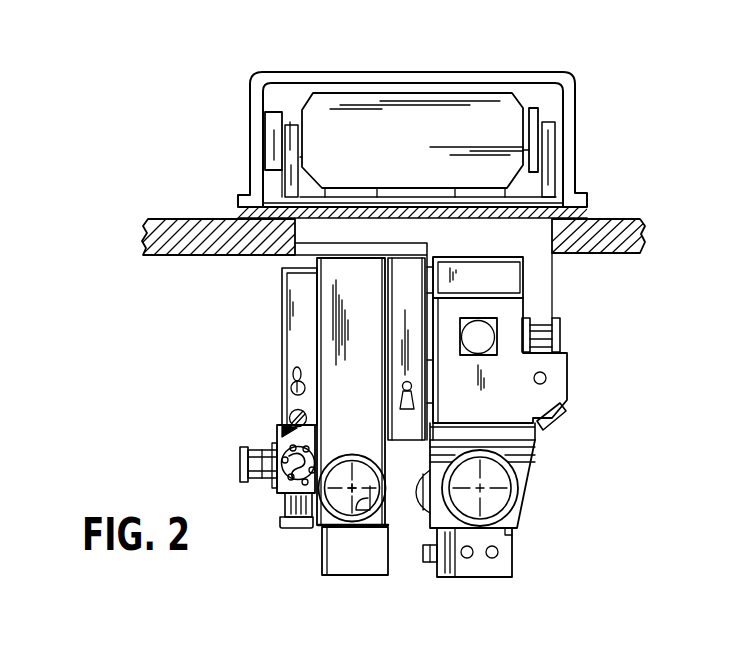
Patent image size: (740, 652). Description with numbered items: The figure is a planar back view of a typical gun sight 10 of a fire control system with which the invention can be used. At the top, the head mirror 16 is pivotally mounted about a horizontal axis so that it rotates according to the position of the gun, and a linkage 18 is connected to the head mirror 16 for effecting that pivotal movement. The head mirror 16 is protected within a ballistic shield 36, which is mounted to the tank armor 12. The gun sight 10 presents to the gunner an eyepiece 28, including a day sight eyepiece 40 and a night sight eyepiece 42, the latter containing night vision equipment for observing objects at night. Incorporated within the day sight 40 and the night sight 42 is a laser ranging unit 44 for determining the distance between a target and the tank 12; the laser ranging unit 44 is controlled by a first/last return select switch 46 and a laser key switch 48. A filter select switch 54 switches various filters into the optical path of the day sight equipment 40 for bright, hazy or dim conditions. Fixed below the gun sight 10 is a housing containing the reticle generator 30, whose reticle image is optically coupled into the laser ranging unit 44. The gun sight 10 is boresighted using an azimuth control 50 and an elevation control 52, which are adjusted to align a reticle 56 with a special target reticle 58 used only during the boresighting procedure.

The gun sight 10 is at (180, 148).
The tank armor 12 is at (613, 222).
The head mirror 16 is at (425, 115).
The linkage 18 is at (273, 134).
The eyepiece 28 is at (342, 455).
The reticle generator 30 is at (322, 558).
The ballistic shield 36 is at (575, 94).
The day sight eyepiece 40 is at (345, 540).
The night sight eyepiece 42 is at (523, 550).
The laser ranging unit 44 is at (290, 296).
The first/last return select switch 46 is at (292, 386).
The laser key switch 48 is at (290, 415).
The azimuth control 50 is at (240, 456).
The elevation control 52 is at (288, 503).
The filter select switch 54 is at (407, 409).
The reticle 56 is at (362, 514).
The special target reticle 58 is at (355, 483).